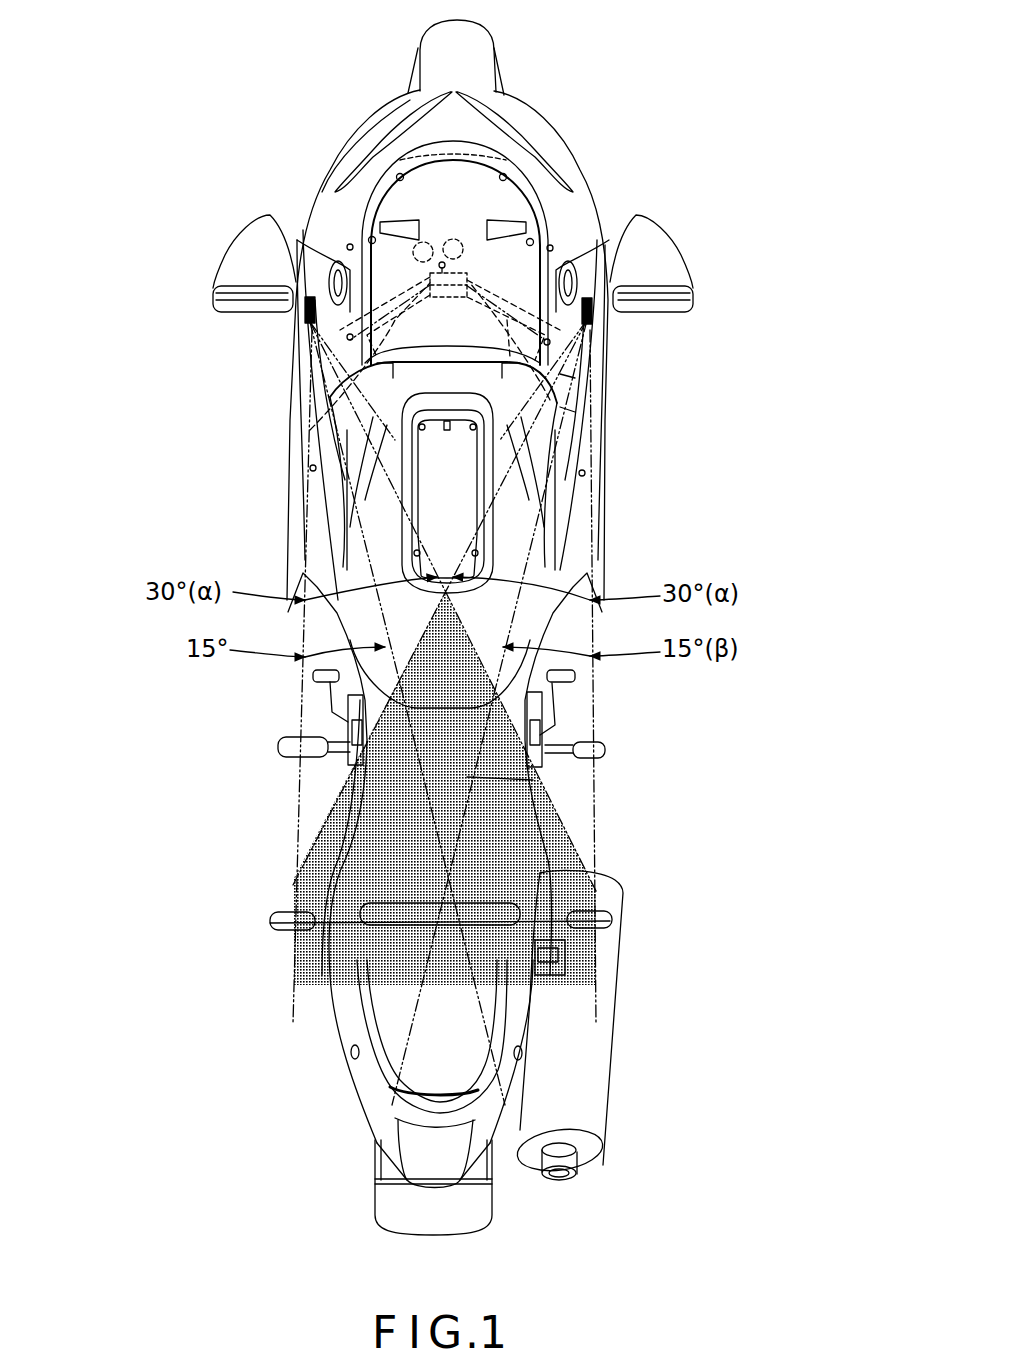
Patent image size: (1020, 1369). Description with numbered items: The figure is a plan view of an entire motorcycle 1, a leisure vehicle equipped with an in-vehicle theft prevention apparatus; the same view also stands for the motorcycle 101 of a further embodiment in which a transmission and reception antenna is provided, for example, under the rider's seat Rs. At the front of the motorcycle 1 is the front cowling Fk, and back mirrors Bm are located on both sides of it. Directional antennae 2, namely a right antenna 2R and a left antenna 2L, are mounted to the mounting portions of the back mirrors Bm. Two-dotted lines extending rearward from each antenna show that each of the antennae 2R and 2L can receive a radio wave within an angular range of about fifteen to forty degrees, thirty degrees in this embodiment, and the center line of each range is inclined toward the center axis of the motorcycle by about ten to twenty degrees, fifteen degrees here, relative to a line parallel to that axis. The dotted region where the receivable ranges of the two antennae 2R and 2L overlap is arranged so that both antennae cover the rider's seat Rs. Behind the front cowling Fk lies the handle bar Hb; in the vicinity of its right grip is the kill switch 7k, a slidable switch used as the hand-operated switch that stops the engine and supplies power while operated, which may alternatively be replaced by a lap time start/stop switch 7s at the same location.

The motorcycle 1 is at (485, 621).
The motorcycle 101 is at (560, 123).
The front cowling Fk is at (322, 192).
The back mirrors Bm is at (240, 260).
The directional antennae 2 is at (437, 358).
The left directional antenna 2L is at (300, 322).
The right directional antenna 2R is at (598, 325).
The lap time start/stop switch 7s is at (575, 378).
The kill switch 7k is at (575, 412).
The handle bar Hb is at (310, 430).
The rider's seat Rs is at (533, 780).